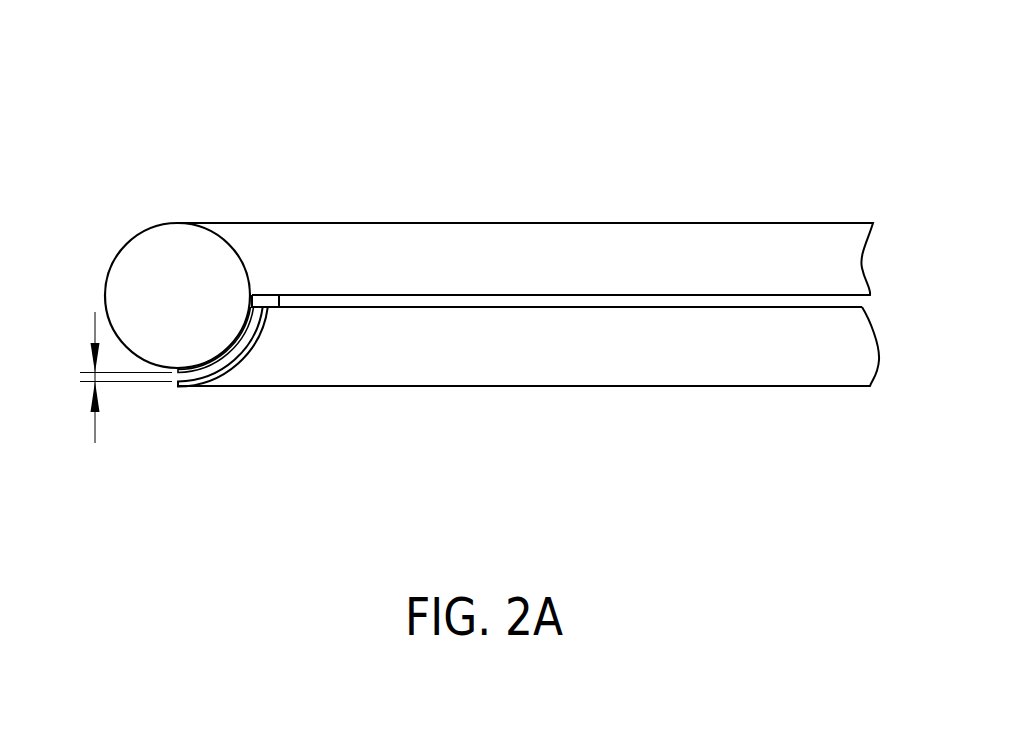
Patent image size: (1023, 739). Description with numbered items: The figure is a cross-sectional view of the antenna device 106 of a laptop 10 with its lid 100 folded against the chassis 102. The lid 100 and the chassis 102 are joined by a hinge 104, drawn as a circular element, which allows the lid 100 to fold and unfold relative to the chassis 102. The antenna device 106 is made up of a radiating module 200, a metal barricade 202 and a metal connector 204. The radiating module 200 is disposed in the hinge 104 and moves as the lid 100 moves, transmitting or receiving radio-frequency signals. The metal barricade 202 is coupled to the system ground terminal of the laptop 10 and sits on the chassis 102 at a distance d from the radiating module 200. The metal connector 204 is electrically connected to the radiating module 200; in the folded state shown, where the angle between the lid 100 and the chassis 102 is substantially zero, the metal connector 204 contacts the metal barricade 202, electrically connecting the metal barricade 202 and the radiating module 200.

The laptop 10 is at (877, 65).
The lid 100 is at (627, 260).
The chassis 102 is at (753, 302).
The hinge 104 is at (150, 270).
The antenna device 106 is at (349, 168).
The radiating module 200 is at (244, 319).
The metal barricade 202 is at (268, 320).
The metal connector 204 is at (262, 303).